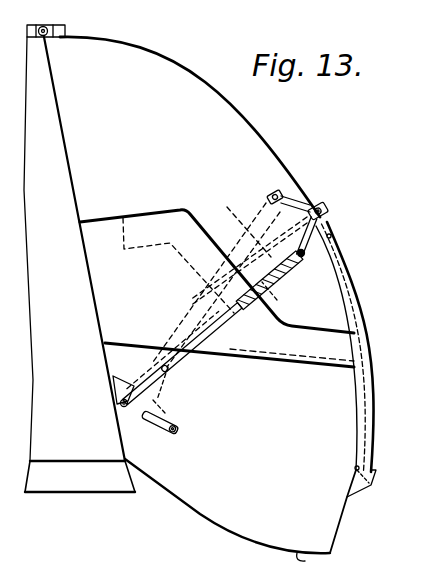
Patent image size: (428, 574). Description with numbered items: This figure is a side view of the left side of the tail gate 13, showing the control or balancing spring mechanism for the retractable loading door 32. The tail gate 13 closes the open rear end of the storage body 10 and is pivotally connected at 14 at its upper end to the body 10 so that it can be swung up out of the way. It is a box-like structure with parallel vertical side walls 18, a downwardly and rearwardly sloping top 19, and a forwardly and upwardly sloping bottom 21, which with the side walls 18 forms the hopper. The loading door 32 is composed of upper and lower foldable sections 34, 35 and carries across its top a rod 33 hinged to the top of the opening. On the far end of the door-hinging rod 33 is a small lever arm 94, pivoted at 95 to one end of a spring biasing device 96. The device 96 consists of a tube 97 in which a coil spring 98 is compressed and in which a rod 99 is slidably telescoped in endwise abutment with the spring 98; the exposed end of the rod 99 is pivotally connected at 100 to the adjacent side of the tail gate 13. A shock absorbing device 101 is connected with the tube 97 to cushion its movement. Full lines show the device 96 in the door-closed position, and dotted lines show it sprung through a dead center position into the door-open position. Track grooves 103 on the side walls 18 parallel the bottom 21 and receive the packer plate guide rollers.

The storage body 10 is at (32, 411).
The tail gate 13 is at (280, 112).
The pivotal connection 14 is at (46, 28).
The side walls 18 is at (158, 159).
The top 19 is at (123, 46).
The bottom 21 is at (310, 563).
The loading door 32 is at (240, 247).
The rod 33 is at (318, 204).
The upper foldable section 34 is at (248, 253).
The lower foldable section 35 is at (279, 263).
The lever arm 94 is at (316, 223).
The pivot 95 is at (305, 253).
The spring biasing device 96 is at (226, 334).
The tube 97 is at (193, 346).
The coil spring 98 is at (284, 301).
The rod 99 is at (115, 386).
The pivotal connection 100 is at (118, 402).
The shock absorbing device 101 is at (150, 430).
The track grooves 103 is at (167, 198).